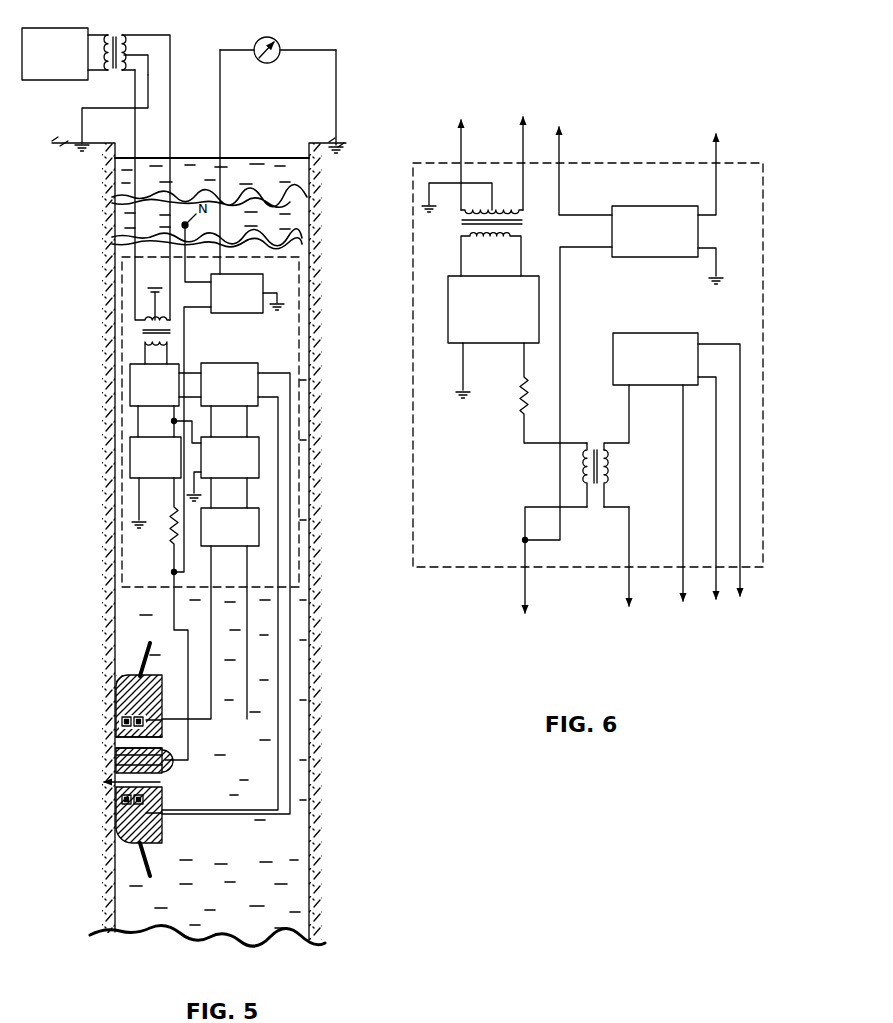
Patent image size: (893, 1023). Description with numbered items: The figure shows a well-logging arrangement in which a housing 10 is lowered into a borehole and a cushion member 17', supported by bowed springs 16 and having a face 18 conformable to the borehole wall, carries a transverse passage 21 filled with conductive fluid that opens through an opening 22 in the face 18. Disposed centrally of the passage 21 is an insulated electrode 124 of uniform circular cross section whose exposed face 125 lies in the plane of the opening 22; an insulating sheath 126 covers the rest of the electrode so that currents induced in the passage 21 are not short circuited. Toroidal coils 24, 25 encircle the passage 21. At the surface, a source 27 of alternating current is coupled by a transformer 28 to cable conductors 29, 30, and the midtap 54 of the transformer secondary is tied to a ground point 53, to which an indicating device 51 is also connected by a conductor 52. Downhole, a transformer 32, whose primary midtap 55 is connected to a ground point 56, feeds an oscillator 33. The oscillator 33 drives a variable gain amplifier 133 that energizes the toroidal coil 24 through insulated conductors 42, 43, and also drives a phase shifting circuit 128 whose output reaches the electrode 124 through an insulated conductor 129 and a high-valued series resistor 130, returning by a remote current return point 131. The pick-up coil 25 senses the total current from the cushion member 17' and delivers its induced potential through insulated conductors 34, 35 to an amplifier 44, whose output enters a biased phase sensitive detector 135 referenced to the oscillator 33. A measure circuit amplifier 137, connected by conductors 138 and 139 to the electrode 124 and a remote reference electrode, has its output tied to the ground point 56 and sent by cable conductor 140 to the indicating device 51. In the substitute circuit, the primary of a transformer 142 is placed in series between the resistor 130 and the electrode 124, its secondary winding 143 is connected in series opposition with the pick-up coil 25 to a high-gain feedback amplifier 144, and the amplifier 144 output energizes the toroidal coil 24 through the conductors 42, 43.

In FIG. 5, the source of alternating current 27 is at (48, 28).
In FIG. 5, the transformer 28 is at (112, 34).
In FIG. 5, the midtap of secondary winding of transformer 54 is at (128, 54).
In FIG. 5, the cable conductor 29 is at (82, 125).
In FIG. 6, the cable conductor 29 is at (461, 143).
In FIG. 5, the ground point 53 is at (342, 152).
In FIG. 5, the cable conductor 30 is at (172, 112).
In FIG. 6, the cable conductor 30 is at (523, 143).
In FIG. 5, the indicating device 51 is at (278, 40).
In FIG. 5, the conductor 52 is at (337, 108).
In FIG. 5, the cable conductor 140 is at (222, 92).
In FIG. 6, the cable conductor 140 is at (716, 148).
In FIG. 5, the housing 10 is at (122, 416).
In FIG. 6, the housing 10 is at (414, 537).
In FIG. 5, the ground point 56 is at (156, 286).
In FIG. 6, the ground point 56 is at (722, 277).
In FIG. 5, the midtap of primary winding of transformer 55 is at (145, 320).
In FIG. 5, the transformer 32 is at (143, 332).
In FIG. 6, the transformer 32 is at (462, 224).
In FIG. 5, the oscillator 33 is at (130, 389).
In FIG. 6, the oscillator 33 is at (448, 290).
In FIG. 5, the conductor 139 is at (189, 282).
In FIG. 6, the conductor 139 is at (559, 143).
In FIG. 5, the measure circuit amplifier 137 is at (243, 274).
In FIG. 6, the measure circuit amplifier 137 is at (640, 257).
In FIG. 5, the conductor 138 is at (186, 350).
In FIG. 6, the conductor 138 is at (561, 325).
In FIG. 5, the variable gain amplifier 133 is at (213, 363).
In FIG. 5, the phase shifting circuit 128 is at (130, 455).
In FIG. 5, the biased phase sensitive detector 135 is at (260, 442).
In FIG. 5, the amplifier 44 is at (258, 512).
In FIG. 5, the remote current return point 131 is at (140, 520).
In FIG. 6, the remote current return point 131 is at (463, 388).
In FIG. 5, the series resistor 130 is at (170, 532).
In FIG. 6, the series resistor 130 is at (522, 400).
In FIG. 5, the insulated conductor 129 is at (175, 606).
In FIG. 6, the insulated conductor 129 is at (525, 598).
In FIG. 5, the insulated conductor 34 is at (212, 650).
In FIG. 6, the insulated conductor 34 is at (629, 588).
In FIG. 5, the insulated conductor 35 is at (248, 680).
In FIG. 6, the insulated conductor 35 is at (683, 592).
In FIG. 5, the insulated conductor 42 is at (276, 725).
In FIG. 6, the insulated conductor 42 is at (716, 585).
In FIG. 5, the insulated conductor 43 is at (289, 780).
In FIG. 6, the insulated conductor 43 is at (740, 582).
In FIG. 5, the bowed springs 16 is at (153, 870).
In FIG. 5, the cushion member 17' is at (113, 694).
In FIG. 5, the face 18 is at (116, 704).
In FIG. 5, the toroidal pick-up coil 25 is at (164, 712).
In FIG. 5, the toroidal coil 24 is at (118, 805).
In FIG. 5, the opening 22 is at (114, 746).
In FIG. 5, the insulating sheath 126 is at (176, 750).
In FIG. 5, the insulated electrode 124 is at (173, 768).
In FIG. 5, the exposed face 125 is at (115, 780).
In FIG. 5, the passage 21 is at (166, 790).
In FIG. 6, the feedback amplifier 144 is at (640, 333).
In FIG. 6, the secondary winding of transformer 143 is at (612, 470).
In FIG. 6, the transformer 142 is at (603, 490).